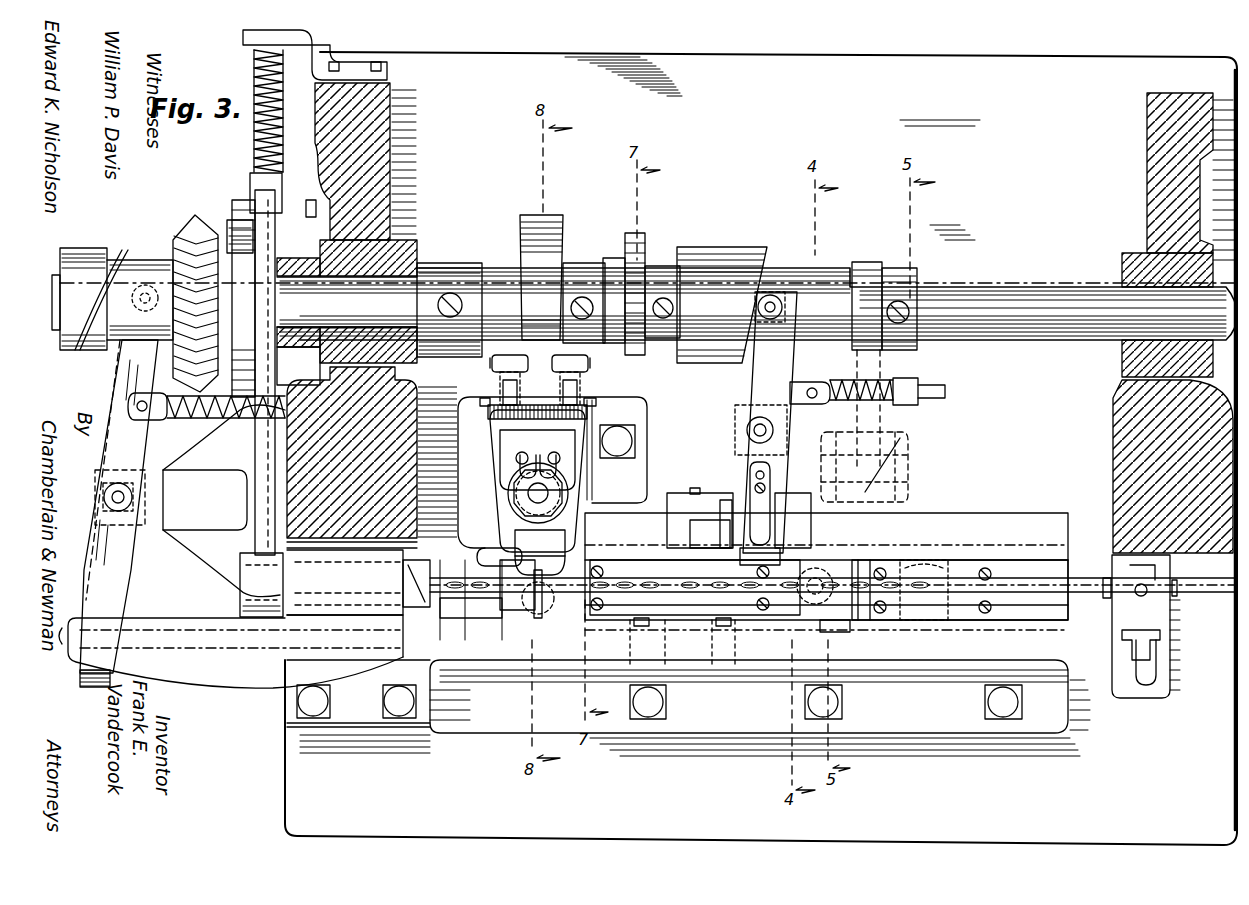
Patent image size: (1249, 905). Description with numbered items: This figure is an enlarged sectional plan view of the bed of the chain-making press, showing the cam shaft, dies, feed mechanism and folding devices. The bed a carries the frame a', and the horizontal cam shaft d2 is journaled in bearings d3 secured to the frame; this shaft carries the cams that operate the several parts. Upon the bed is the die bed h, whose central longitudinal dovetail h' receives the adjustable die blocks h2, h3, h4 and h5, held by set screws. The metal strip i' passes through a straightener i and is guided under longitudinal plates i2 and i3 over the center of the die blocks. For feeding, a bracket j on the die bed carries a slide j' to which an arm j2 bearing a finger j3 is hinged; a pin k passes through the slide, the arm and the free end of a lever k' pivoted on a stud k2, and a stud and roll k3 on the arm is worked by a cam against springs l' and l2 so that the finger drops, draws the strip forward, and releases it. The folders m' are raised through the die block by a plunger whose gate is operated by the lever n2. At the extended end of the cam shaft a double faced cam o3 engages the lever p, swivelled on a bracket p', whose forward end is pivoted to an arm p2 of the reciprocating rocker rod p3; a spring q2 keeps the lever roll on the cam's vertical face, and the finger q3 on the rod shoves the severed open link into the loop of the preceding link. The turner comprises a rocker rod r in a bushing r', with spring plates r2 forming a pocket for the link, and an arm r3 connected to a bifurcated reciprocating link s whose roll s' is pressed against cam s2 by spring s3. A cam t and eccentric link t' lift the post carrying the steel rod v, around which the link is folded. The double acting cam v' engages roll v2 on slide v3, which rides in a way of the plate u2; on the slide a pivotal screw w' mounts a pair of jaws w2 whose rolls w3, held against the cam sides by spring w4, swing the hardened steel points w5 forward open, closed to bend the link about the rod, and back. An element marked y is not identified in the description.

The bed a is at (760, 324).
The frame a' is at (759, 168).
The cam shaft d2 is at (972, 302).
The bearings d3 is at (405, 250).
The double faced cam o3 is at (118, 262).
The reciprocating link s is at (265, 372).
The roll s' is at (251, 213).
The cam s2 is at (243, 298).
The spring s3 is at (281, 111).
The lever p is at (126, 506).
The bracket p' is at (190, 501).
The arm p2 is at (84, 687).
The reciprocating rocker rod p3 is at (422, 602).
The spring q2 is at (206, 421).
The finger q3 is at (557, 620).
The lever y is at (231, 653).
The rocker rod r is at (423, 576).
The bushing r' is at (345, 582).
The longitudinal spring plates r2 is at (498, 593).
The arm r3 is at (240, 596).
The steel rod v is at (550, 594).
The double acting cam v' is at (541, 277).
The roll v2 is at (500, 412).
The slide v3 is at (535, 440).
The pivotal screw w' is at (538, 493).
The pair of jaws w2 is at (498, 484).
The rolls w3 is at (496, 374).
The spring w4 is at (596, 418).
The hardened steel points w5 is at (522, 557).
The plate u2 is at (566, 520).
The cam t is at (645, 282).
The eccentric link t' is at (608, 283).
The pin k is at (770, 422).
The lever k' is at (764, 397).
The stud k2 is at (742, 416).
The stud and roll k3 is at (784, 307).
The spring l' is at (864, 456).
The spring l2 is at (768, 515).
The lever n2 is at (868, 420).
The folders m' is at (821, 583).
The bracket j is at (700, 506).
The slide j' is at (711, 503).
The arm j2 is at (735, 556).
The finger j3 is at (700, 560).
The die bed h is at (826, 566).
The central longitudinal dovetail h' is at (885, 570).
The die block h2 is at (932, 562).
The die block h3 is at (840, 622).
The die block h4 is at (733, 620).
The die block h5 is at (648, 620).
The straightener i is at (1152, 626).
The metal strip i' is at (1127, 576).
The longitudinal plates i2 is at (960, 590).
The longitudinal plates i3 is at (695, 587).